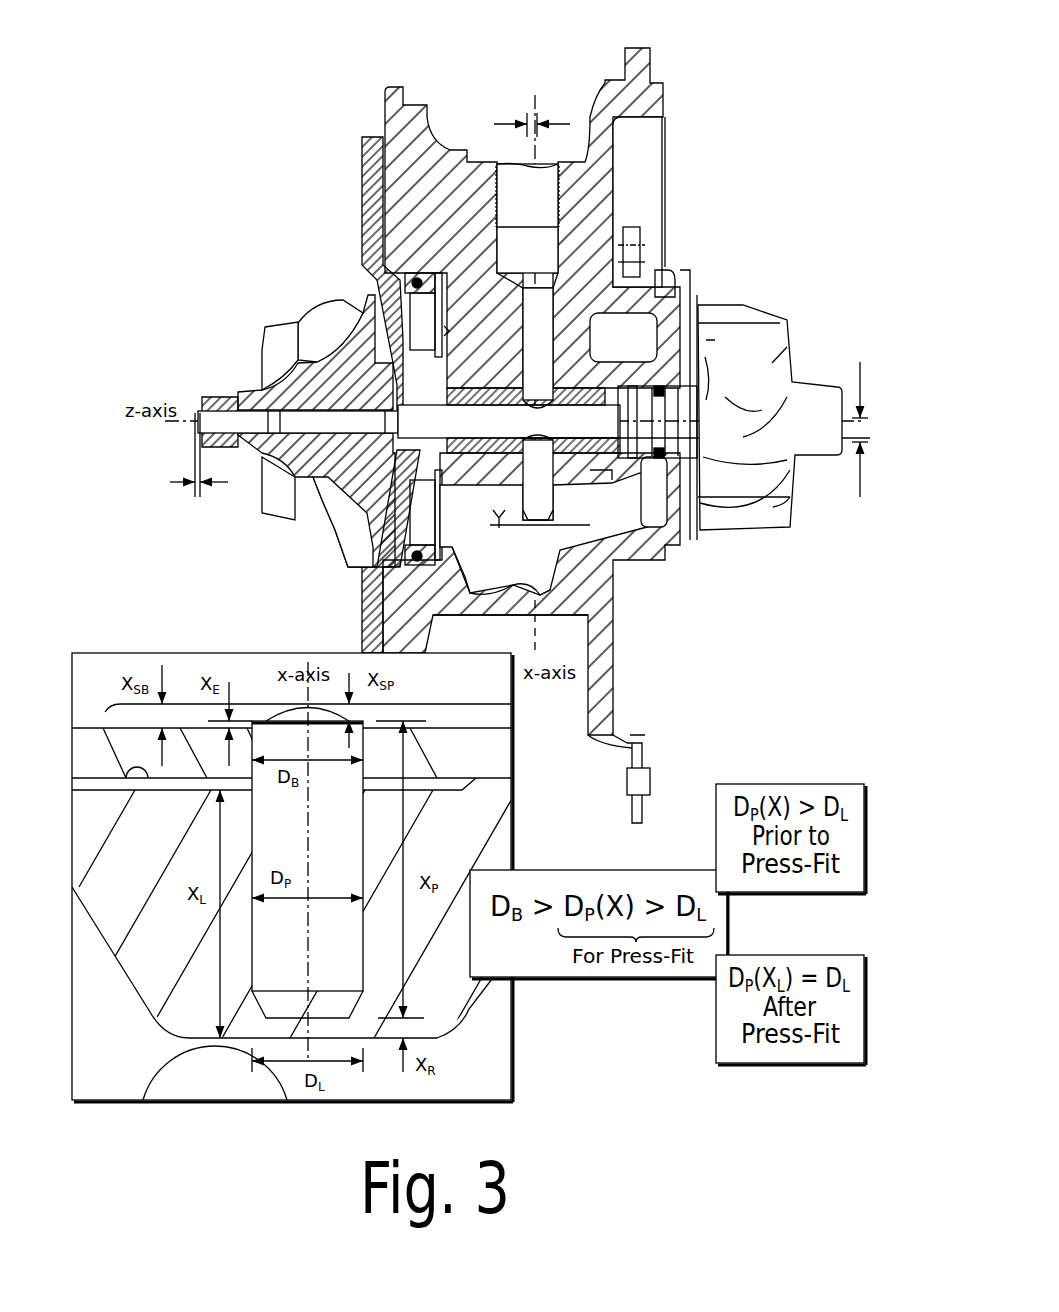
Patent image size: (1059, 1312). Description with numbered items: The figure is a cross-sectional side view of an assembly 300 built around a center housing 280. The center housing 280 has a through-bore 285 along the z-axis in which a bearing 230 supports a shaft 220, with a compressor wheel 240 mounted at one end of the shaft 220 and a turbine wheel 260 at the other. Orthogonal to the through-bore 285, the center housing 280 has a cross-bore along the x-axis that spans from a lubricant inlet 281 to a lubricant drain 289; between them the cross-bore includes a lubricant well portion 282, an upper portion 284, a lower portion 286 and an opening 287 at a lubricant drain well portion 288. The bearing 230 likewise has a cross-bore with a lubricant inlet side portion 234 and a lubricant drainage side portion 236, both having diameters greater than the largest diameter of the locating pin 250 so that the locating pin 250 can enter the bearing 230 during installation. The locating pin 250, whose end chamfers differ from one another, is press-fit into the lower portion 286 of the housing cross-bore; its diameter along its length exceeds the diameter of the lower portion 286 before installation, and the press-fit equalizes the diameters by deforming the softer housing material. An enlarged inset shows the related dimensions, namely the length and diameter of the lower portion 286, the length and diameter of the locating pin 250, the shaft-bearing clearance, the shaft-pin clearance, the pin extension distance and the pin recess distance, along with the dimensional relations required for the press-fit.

The shaft 220 is at (447, 432).
The bearing 230 is at (478, 386).
The lubricant inlet side portion 234 is at (558, 407).
The lubricant drainage side portion 236 is at (520, 447).
The compressor wheel 240 is at (369, 397).
The locating pin 250 is at (528, 480).
The turbine wheel 260 is at (761, 381).
The center housing 280 is at (462, 237).
The lubricant inlet 281 is at (502, 147).
The lubricant well portion 282 is at (527, 285).
The upper portion 284 is at (520, 323).
The through-bore 285 is at (572, 392).
The lower portion 286 is at (636, 481).
The opening 287 is at (522, 522).
The lubricant drain well portion 288 is at (531, 580).
The lubricant drain 289 is at (503, 619).
The assembly 300 is at (731, 174).